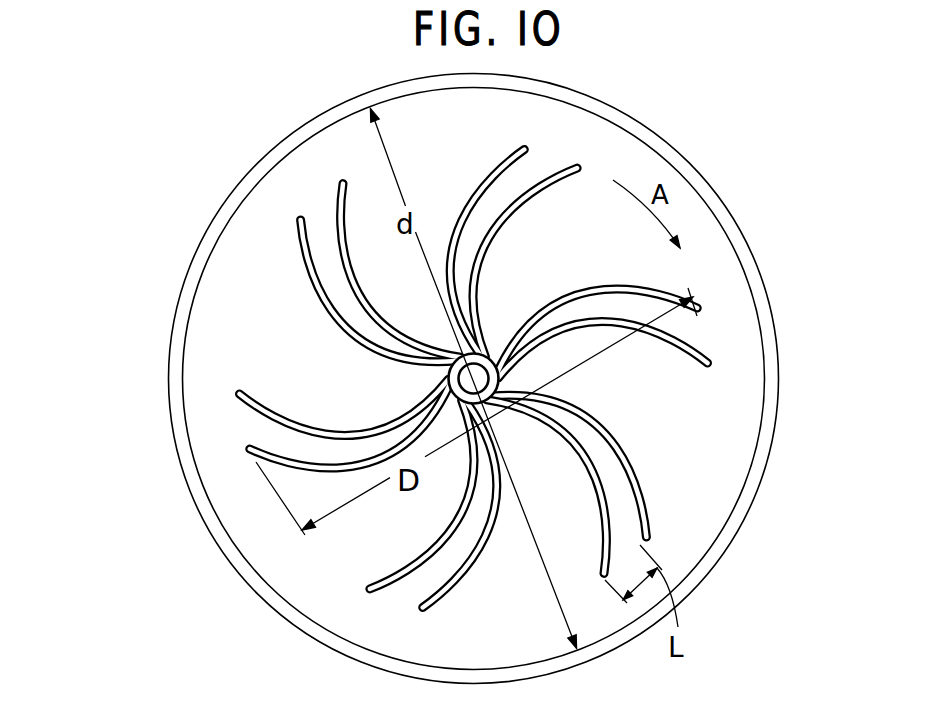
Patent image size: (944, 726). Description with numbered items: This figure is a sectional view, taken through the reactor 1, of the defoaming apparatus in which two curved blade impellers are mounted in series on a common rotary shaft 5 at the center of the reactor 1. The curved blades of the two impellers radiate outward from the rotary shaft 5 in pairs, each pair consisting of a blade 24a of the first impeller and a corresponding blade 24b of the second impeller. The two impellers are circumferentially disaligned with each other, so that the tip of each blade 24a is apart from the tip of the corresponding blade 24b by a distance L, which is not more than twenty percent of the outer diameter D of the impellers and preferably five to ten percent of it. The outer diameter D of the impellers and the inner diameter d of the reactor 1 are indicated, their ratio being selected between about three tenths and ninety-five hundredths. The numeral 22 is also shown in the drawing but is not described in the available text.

The reactor 1 is at (186, 317).
The rotary shaft 5 is at (462, 387).
The blade 22 is at (474, 379).
The blade of impeller 2A 24a is at (598, 493).
The blade of impeller 2B 24b is at (630, 469).